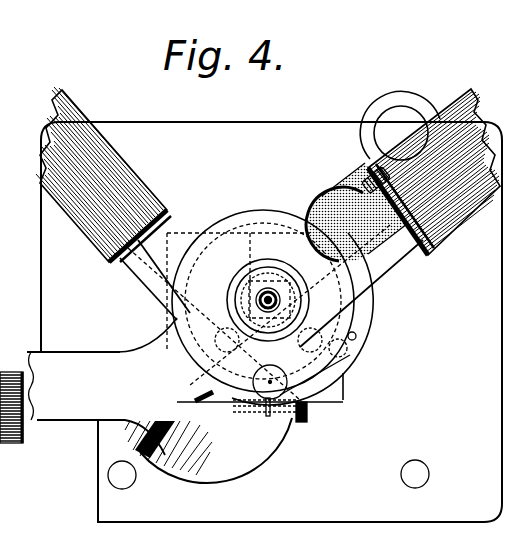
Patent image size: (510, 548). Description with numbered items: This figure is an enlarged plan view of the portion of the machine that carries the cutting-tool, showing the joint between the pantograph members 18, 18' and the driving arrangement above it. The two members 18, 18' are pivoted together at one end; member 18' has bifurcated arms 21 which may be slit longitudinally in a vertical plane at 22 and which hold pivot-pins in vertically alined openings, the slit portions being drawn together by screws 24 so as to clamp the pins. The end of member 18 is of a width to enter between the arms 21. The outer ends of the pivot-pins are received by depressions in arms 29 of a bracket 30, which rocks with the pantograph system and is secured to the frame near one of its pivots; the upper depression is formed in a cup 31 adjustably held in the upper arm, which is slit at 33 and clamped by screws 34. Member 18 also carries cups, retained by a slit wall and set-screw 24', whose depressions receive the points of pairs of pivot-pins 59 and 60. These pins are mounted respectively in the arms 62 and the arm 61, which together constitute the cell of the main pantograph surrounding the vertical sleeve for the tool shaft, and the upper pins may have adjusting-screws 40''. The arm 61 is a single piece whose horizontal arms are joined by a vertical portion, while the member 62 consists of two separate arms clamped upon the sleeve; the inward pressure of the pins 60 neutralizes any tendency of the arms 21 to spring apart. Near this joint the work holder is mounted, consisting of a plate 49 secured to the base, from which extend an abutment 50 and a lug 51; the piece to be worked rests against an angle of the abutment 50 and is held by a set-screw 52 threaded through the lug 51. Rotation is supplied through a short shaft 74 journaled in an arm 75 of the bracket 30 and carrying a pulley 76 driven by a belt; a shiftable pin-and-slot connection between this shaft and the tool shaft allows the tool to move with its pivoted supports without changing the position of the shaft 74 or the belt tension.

The member 18 is at (103, 174).
The member 18' is at (250, 272).
The bifurcated arms 21 is at (139, 260).
The slit 22 is at (163, 268).
The screws 24 is at (168, 423).
The set-screw 24' is at (343, 362).
The arms 29 is at (300, 425).
The bracket 30 is at (219, 470).
The upper cup 31 is at (240, 400).
The slit 33 is at (270, 416).
The screws 34 is at (310, 407).
The adjusting-screws 40'' is at (250, 394).
The plate 49 is at (271, 322).
The abutment 50 is at (188, 233).
The lug 51 is at (325, 196).
The set-screw 52 is at (367, 158).
The pivot-pins 59 is at (353, 349).
The pivot-pins 60 is at (245, 327).
The arm 61 is at (208, 402).
The arms 62 is at (350, 310).
The short shaft 74 is at (280, 300).
The arm 75 is at (143, 352).
The pulley 76 is at (262, 216).